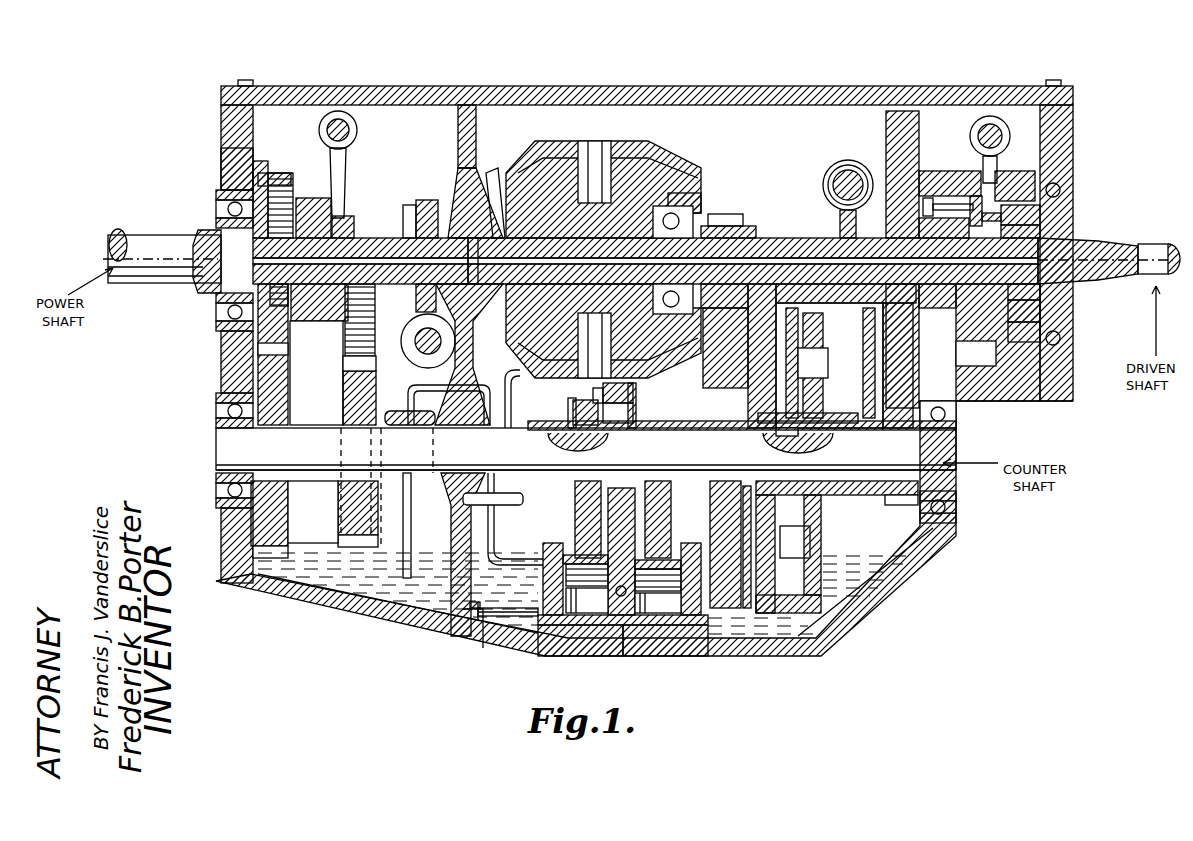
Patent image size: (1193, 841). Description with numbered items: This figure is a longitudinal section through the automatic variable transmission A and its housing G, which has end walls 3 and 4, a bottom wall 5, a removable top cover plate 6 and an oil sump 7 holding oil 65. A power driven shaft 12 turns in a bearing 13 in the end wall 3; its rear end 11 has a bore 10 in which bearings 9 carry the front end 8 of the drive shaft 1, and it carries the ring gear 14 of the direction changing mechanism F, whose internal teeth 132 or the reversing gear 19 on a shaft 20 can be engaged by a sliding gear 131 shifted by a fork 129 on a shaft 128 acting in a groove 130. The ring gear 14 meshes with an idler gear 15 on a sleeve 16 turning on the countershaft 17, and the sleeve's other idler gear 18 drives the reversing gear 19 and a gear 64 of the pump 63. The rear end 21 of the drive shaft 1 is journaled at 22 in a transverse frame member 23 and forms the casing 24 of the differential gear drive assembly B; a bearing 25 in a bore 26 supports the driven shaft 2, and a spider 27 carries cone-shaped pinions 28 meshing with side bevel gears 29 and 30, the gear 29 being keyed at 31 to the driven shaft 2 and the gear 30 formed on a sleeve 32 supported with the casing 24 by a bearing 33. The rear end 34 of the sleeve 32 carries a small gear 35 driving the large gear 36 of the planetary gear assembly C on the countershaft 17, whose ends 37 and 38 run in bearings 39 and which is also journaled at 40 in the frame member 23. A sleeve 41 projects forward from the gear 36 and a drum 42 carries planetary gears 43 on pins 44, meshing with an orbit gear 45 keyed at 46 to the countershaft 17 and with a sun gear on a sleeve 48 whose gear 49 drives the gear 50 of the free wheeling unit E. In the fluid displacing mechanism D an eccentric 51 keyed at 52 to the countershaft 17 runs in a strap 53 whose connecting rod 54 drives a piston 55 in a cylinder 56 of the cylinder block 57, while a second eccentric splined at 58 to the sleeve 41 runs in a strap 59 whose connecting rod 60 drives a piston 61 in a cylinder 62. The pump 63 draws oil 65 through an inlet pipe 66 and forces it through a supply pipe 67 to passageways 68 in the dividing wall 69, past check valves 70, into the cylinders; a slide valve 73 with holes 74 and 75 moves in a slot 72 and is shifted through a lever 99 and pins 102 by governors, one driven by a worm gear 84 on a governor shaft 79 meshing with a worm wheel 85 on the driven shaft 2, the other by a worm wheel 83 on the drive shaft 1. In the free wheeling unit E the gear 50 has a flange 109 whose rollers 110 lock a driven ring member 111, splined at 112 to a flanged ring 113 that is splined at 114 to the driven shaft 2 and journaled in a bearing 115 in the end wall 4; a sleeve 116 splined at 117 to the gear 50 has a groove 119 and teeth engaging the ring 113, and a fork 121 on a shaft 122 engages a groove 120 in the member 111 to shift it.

The drive shaft 1 is at (375, 236).
The driven shaft 2 is at (790, 224).
The end wall 3 is at (213, 355).
The end wall 4 is at (1065, 362).
The bottom wall 5 is at (416, 612).
The top cover plate 6 is at (500, 90).
The oil sump 7 is at (400, 590).
The front end 8 is at (290, 190).
The bearings 9 is at (200, 275).
The bore 10 is at (198, 262).
The rear end 11 is at (195, 236).
The power driven shaft 12 is at (145, 234).
The bearing 13 is at (208, 200).
The ring gear 14 is at (245, 165).
The idler gear 15 is at (213, 520).
The sleeve 16 is at (300, 410).
The countershaft 17 is at (401, 488).
The idler gear 18 is at (355, 330).
The reversing gear 19 is at (335, 363).
The shaft 20 is at (308, 330).
The rear end 21 is at (408, 298).
The journal 22 is at (450, 180).
The transverse frame member 23 is at (450, 118).
The casing 24 is at (540, 133).
The bearing 25 is at (490, 335).
The bore 26 is at (412, 205).
The spider 27 is at (590, 133).
The differential cone-shaped gears 28 is at (655, 152).
The side bevel gear 29 is at (520, 150).
The side bevel gear 30 is at (672, 185).
The key 31 is at (485, 205).
The sleeve 32 is at (740, 205).
The bearing 33 is at (690, 205).
The rear end 34 is at (748, 222).
The small gear 35 is at (745, 205).
The large gear 36 is at (700, 335).
The end 37 is at (215, 433).
The end 38 is at (954, 441).
The bearings 39 is at (208, 390).
The journal 40 is at (403, 495).
The sleeve 41 is at (685, 415).
The open-ended drum 42 is at (825, 640).
The planetary gears 43 is at (815, 345).
The pins 44 is at (808, 362).
The orbit gear 45 is at (795, 322).
The key 46 is at (808, 412).
The sleeve 48 is at (819, 427).
The gear 49 is at (890, 497).
The gear 50 is at (878, 118).
The eccentric 51 is at (565, 400).
The key 52 is at (560, 415).
The strap 53 is at (586, 401).
The connecting rod 54 is at (567, 510).
The piston 55 is at (555, 520).
The cylinder 56 is at (545, 538).
The cylinder block 57 is at (700, 655).
The spline 58 is at (618, 412).
The strap 59 is at (625, 378).
The connecting rod 60 is at (635, 494).
The piston 61 is at (684, 535).
The cylinder 62 is at (380, 380).
The fluid pump 63 is at (435, 397).
The gear 64 is at (328, 497).
The oil 65 is at (293, 573).
The inlet pipe 66 is at (360, 598).
The supply pipe 67 is at (495, 500).
The passageways 68 is at (612, 625).
The dividing wall 69 is at (608, 537).
The check valves 70 is at (623, 589).
The slot 72 is at (612, 620).
The slide valve 73 is at (492, 612).
The aperture 74 is at (585, 625).
The aperture 75 is at (650, 625).
The governor shaft 79 is at (825, 165).
The worm wheel 83 is at (402, 197).
The worm gear 84 is at (853, 156).
The worm wheel 85 is at (832, 212).
The lever 99 is at (465, 612).
The pins 102 is at (470, 615).
The flange 109 is at (945, 188).
The rollers 110 is at (960, 195).
The driven ring member 111 is at (911, 200).
The spline 112 is at (1065, 150).
The flanged ring 113 is at (1032, 305).
The spline 114 is at (1032, 222).
The bearing 115 is at (1032, 330).
The sleeve 116 is at (1032, 210).
The spline 117 is at (960, 345).
The circumferential groove 119 is at (960, 282).
The circumferential groove 120 is at (990, 360).
The fork 121 is at (1003, 157).
The shaft 122 is at (990, 110).
The shaft 128 is at (333, 112).
The fork 129 is at (337, 160).
The groove 130 is at (337, 200).
The sliding gear 131 is at (213, 328).
The teeth 132 is at (262, 175).
The automatic variable transmission A is at (743, 120).
The differential gear drive assembly B is at (642, 128).
The planetary gear assembly C is at (762, 368).
The fluid displacing mechanism D is at (495, 680).
The free wheeling unit E is at (1003, 152).
The direction changing mechanism F is at (358, 211).
The housing G is at (254, 133).